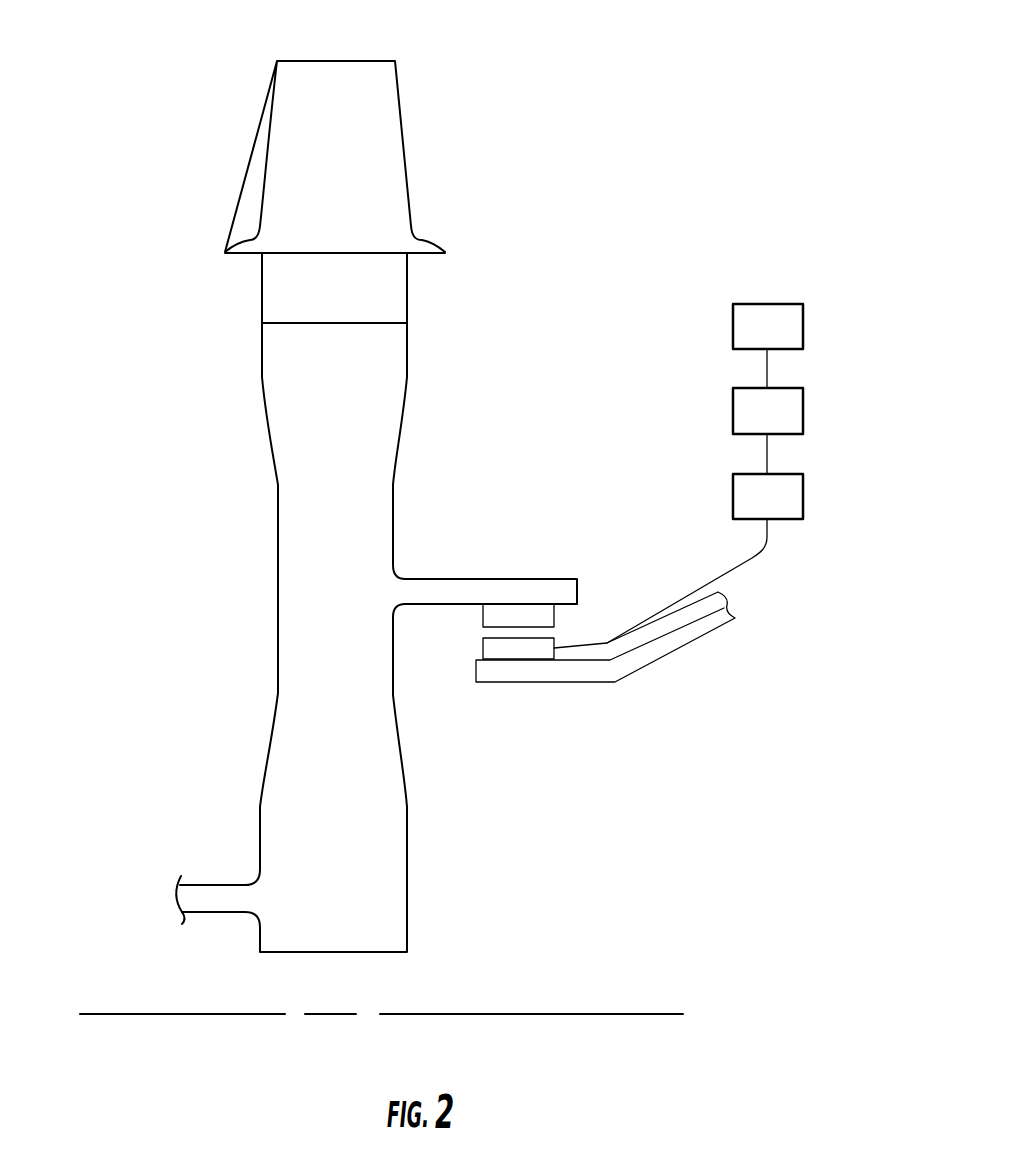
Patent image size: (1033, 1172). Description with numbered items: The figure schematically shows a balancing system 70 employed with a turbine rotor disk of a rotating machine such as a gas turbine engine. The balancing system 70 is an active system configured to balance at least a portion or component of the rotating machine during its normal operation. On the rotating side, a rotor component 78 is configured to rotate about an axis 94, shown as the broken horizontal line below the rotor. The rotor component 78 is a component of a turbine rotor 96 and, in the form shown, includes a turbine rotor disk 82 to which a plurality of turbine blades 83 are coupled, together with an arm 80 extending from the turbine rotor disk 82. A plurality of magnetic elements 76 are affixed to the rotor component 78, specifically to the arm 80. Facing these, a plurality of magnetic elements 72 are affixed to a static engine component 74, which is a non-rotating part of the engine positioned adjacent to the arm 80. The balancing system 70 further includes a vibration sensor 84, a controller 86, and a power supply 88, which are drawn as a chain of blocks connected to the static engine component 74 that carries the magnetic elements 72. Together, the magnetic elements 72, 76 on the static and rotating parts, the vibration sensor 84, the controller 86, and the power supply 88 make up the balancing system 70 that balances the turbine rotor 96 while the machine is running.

The balancing system 70 is at (661, 431).
The magnetic elements 72 is at (480, 649).
The static engine component 74 is at (643, 665).
The magnetic elements 76 is at (555, 618).
The rotor component 78 is at (346, 506).
The arm 80 is at (480, 579).
The turbine rotor disk 82 is at (396, 477).
The turbine blades 83 is at (403, 140).
The vibration sensor 84 is at (803, 327).
The controller 86 is at (803, 411).
The power supply 88 is at (803, 496).
The axis 94 is at (515, 1015).
The turbine rotor 96 is at (492, 480).